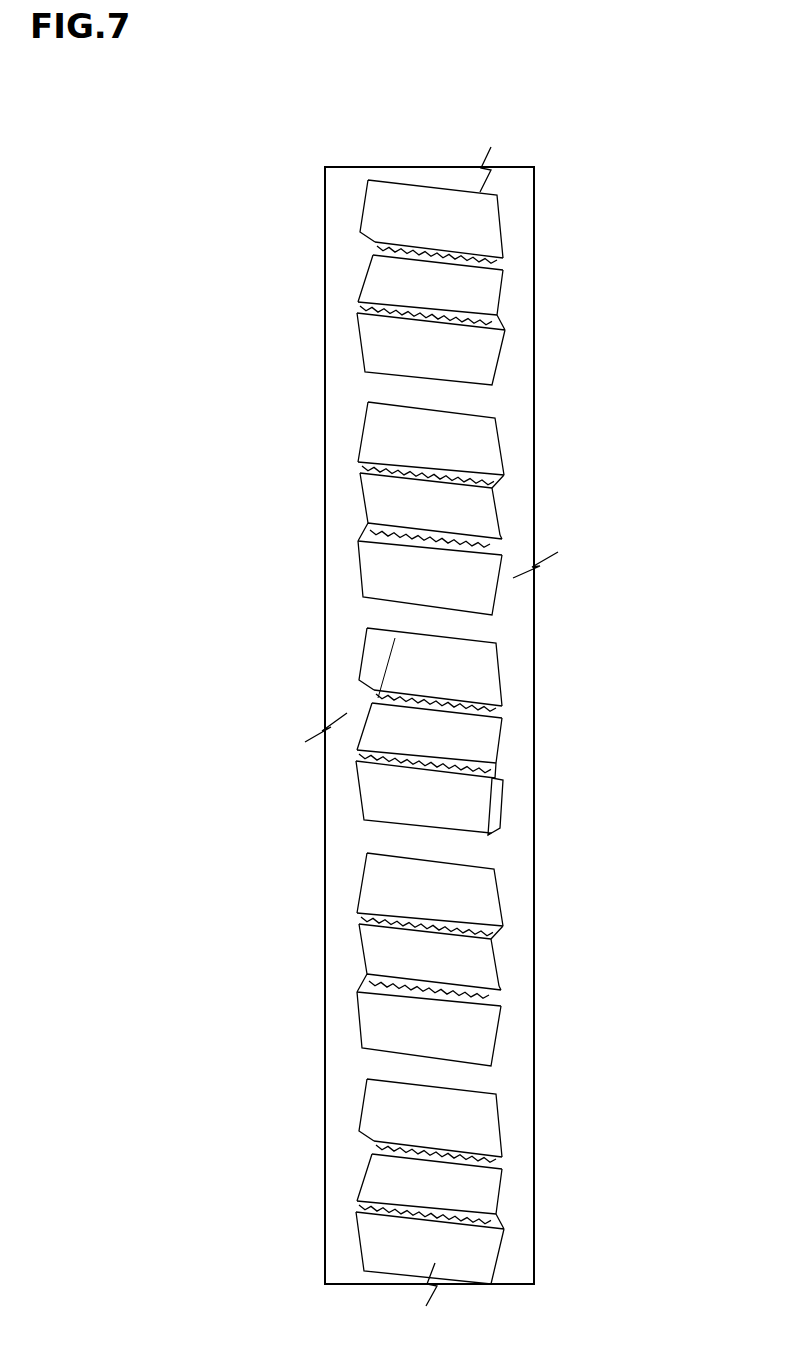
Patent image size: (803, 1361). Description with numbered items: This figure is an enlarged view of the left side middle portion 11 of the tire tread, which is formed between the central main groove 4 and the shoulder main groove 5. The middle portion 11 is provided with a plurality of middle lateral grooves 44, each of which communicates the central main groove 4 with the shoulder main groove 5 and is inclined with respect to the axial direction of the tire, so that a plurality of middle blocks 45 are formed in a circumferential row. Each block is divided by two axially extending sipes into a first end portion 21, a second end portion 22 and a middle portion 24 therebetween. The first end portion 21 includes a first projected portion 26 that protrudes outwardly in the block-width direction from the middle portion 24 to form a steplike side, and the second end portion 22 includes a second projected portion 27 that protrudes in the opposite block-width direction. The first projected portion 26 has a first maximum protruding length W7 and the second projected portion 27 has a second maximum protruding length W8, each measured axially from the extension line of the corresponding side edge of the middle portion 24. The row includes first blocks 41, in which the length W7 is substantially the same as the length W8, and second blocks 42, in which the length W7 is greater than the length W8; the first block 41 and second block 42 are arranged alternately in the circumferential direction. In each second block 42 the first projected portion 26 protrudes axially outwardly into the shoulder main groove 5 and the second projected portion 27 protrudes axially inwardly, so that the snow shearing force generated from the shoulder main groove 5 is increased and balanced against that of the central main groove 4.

The central main groove 4 is at (517, 212).
The shoulder main groove 5 is at (345, 212).
The middle portion 11 is at (431, 214).
The first end portion 21 is at (450, 664).
The second end portion 22 is at (448, 804).
The middle portion 24 is at (450, 737).
The first projected portion 26 is at (375, 644).
The second projected portion 27 is at (493, 831).
The first block 41 is at (434, 510).
The second block 42 is at (434, 288).
The middle lateral groove 44 is at (424, 393).
The middle block 45 is at (446, 1186).
The first maximum protruding length W7 is at (412, 662).
The second maximum protruding length W8 is at (460, 810).